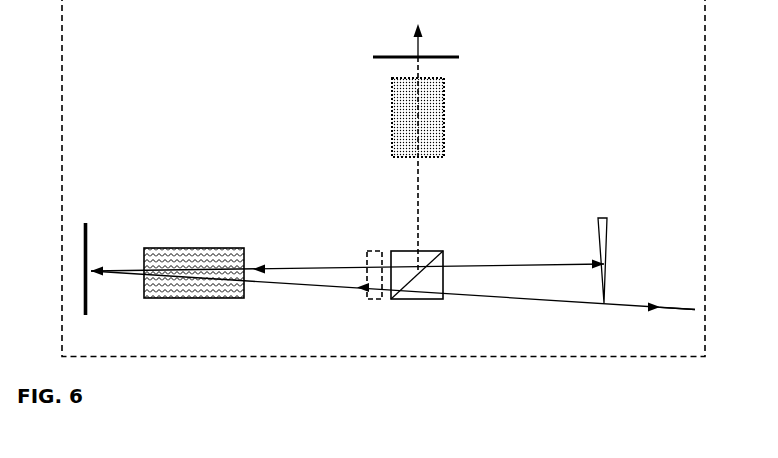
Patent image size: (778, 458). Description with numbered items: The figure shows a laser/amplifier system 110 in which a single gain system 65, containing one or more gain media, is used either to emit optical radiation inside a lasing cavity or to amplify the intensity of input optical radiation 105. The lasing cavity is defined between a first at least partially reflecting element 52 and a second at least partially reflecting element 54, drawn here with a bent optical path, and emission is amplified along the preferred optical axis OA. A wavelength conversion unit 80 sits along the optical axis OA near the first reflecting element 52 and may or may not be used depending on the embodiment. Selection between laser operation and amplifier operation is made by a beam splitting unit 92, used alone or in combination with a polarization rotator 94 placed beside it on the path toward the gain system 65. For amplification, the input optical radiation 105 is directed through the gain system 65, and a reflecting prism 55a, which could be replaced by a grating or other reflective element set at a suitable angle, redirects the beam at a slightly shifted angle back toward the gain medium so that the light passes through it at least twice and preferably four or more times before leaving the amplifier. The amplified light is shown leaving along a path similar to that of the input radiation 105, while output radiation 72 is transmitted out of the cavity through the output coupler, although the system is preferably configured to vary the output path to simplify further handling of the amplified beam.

The first at least partially reflecting element 52 is at (443, 57).
The second at least partially reflecting element 54 is at (87, 222).
The reflecting prism 55a is at (603, 217).
The gain system 65 is at (175, 258).
The output radiation 72 is at (702, 306).
The wavelength conversion unit 80 is at (402, 108).
The beam splitting unit 92 is at (432, 277).
The polarization rotator 94 is at (375, 297).
The input optical radiation 105 is at (533, 299).
The laser/amplifier system 110 is at (581, 92).
The optical axis OA is at (420, 216).